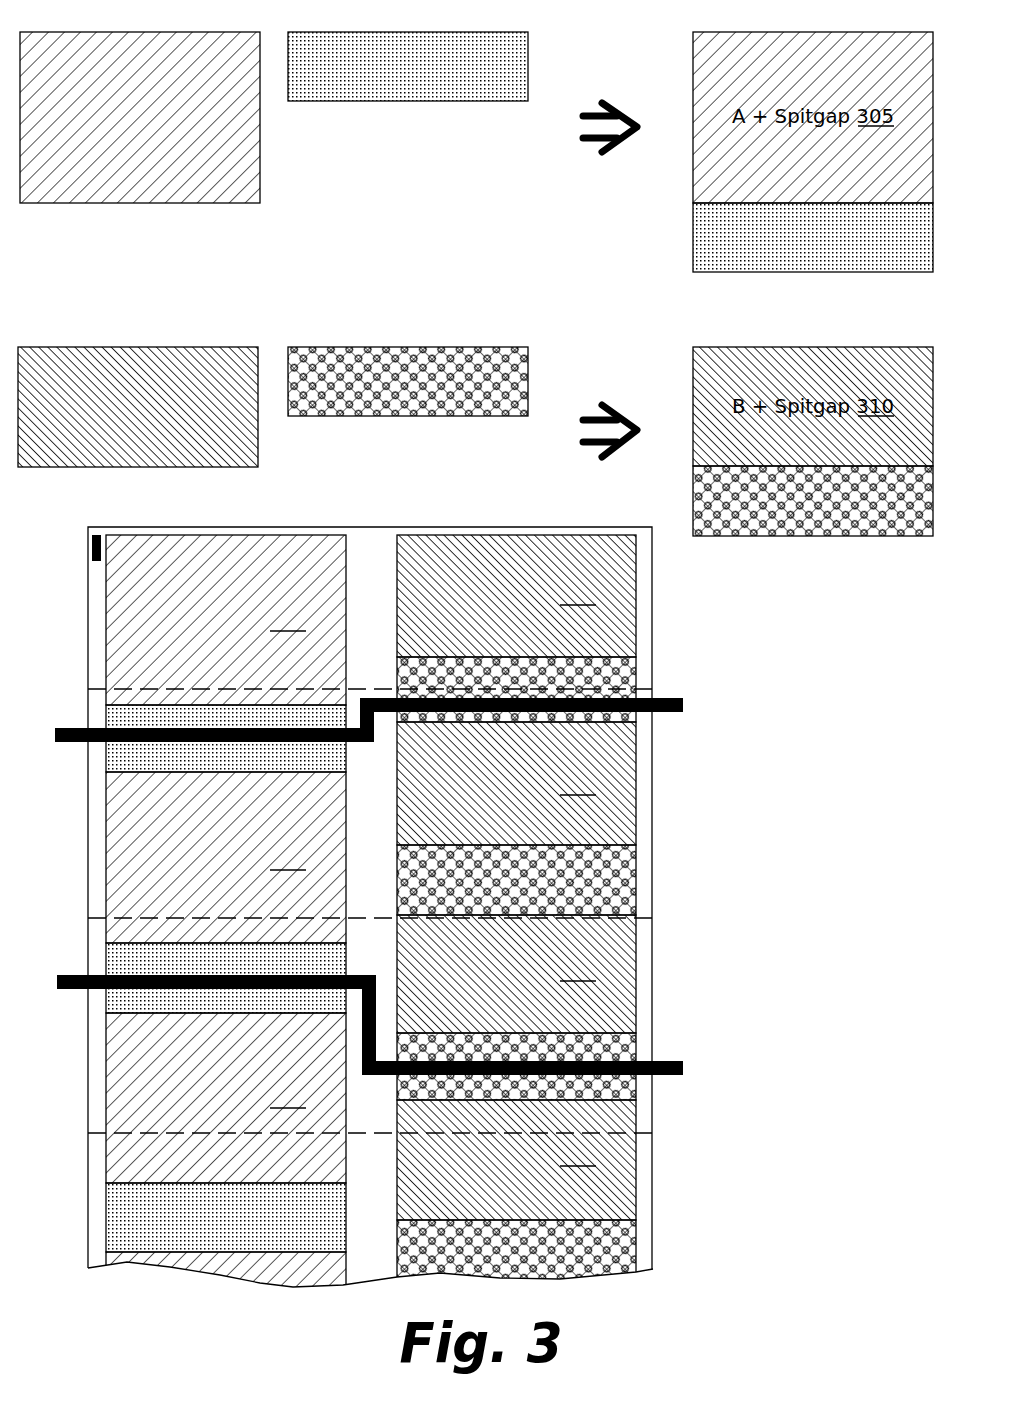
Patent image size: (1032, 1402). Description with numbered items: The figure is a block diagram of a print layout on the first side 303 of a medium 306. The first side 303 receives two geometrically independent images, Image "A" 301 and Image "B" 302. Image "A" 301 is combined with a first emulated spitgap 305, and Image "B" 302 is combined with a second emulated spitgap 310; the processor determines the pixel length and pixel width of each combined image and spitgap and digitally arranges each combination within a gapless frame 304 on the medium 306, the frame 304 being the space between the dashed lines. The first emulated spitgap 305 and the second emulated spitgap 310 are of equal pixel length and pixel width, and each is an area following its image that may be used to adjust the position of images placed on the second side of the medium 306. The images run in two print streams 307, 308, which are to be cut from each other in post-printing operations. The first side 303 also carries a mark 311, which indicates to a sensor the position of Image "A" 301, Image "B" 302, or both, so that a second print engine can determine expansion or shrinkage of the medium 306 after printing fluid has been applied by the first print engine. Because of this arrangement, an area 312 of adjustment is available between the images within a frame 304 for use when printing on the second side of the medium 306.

The Image "A" 301 is at (122, 138).
The Image "B" 302 is at (122, 430).
The first side 303 is at (372, 545).
The gapless frame 304 is at (684, 622).
The first emulated spitgap 305 is at (389, 86).
The medium 306 is at (688, 1292).
The print stream 307 is at (267, 515).
The print stream 308 is at (638, 888).
The second emulated spitgap 310 is at (389, 400).
The mark 311 is at (96, 520).
The area of adjustment 312 is at (706, 705).